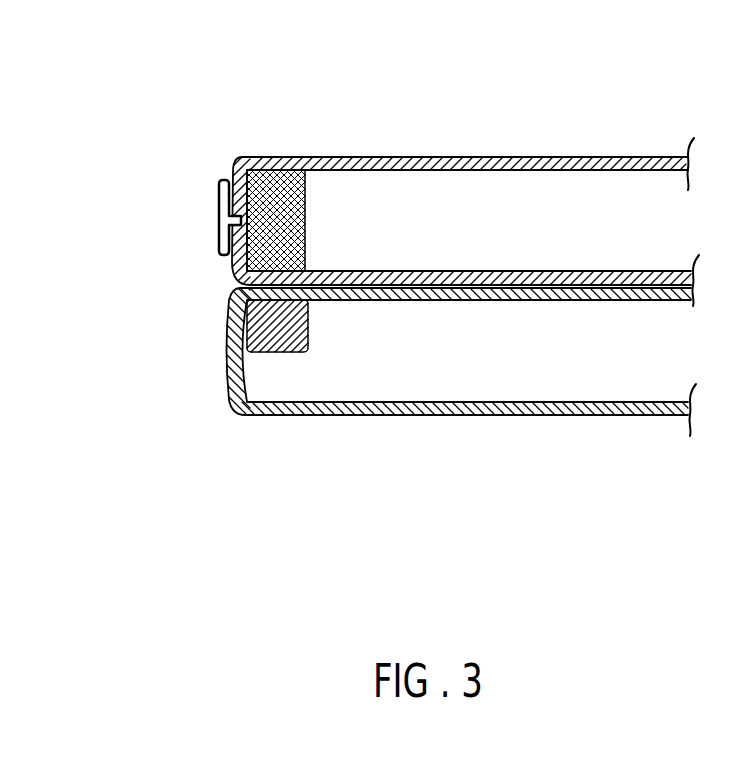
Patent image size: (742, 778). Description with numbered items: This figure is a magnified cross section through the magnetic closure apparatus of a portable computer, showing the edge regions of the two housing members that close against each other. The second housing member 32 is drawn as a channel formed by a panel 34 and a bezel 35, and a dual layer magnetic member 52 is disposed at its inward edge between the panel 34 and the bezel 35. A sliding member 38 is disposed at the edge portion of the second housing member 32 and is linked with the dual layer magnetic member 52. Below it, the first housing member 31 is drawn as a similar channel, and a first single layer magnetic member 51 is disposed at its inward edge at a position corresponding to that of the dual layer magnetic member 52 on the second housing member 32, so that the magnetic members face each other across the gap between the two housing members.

The first housing member 31 is at (593, 415).
The second housing member 32 is at (588, 157).
The panel 34 is at (237, 168).
The bezel 35 is at (233, 272).
The sliding member 38 is at (219, 218).
The first single layer magnetic member 51 is at (278, 333).
The dual layer magnetic member 52 is at (276, 192).